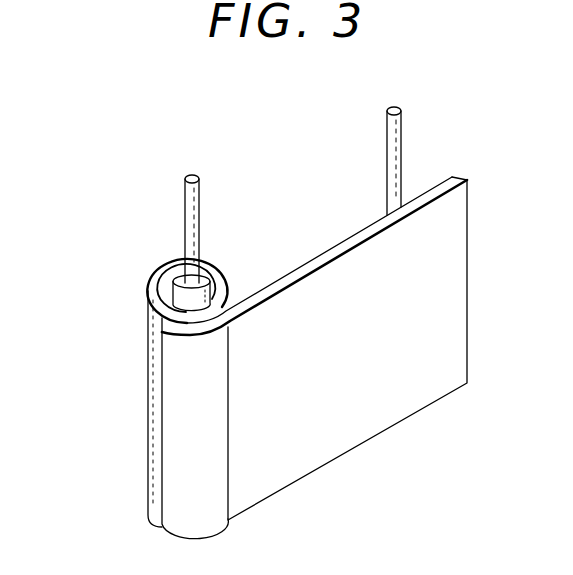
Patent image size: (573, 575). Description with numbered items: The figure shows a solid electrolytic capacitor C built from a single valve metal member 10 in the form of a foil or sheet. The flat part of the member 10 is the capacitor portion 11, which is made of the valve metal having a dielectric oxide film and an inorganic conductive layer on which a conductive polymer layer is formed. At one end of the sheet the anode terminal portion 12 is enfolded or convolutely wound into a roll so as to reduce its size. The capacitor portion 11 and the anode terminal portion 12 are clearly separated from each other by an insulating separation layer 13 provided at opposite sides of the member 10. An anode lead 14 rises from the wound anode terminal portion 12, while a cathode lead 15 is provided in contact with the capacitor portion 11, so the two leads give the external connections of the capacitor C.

The valve metal member 10 is at (467, 472).
The capacitor portion 11 is at (467, 350).
The anode terminal portion 12 is at (147, 279).
The insulating separation layer 13 is at (226, 292).
The anode lead 14 is at (201, 210).
The cathode lead 15 is at (403, 157).
The solid electrolytic capacitor C is at (310, 532).